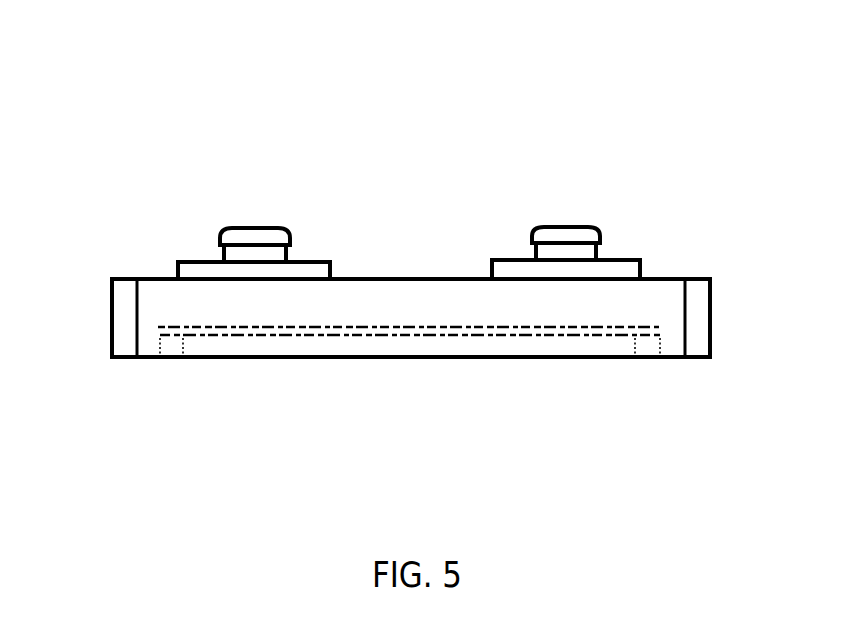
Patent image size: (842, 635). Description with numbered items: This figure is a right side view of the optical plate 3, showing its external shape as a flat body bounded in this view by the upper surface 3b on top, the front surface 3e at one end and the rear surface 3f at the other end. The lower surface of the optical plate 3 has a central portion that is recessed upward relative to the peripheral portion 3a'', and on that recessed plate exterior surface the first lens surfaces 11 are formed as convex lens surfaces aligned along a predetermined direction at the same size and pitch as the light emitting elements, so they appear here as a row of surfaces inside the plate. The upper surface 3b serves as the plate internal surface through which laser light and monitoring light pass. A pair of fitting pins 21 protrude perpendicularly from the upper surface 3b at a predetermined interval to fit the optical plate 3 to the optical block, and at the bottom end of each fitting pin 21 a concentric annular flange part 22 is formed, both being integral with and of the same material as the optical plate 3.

The optical plate 3 is at (157, 130).
The peripheral portion 3a'' is at (393, 393).
The upper surface 3b is at (418, 277).
The front surface 3e is at (110, 318).
The rear surface 3f is at (710, 318).
The first lens surfaces 11 is at (392, 336).
The fitting pins 21 is at (252, 226).
The annular flange part 22 is at (200, 261).